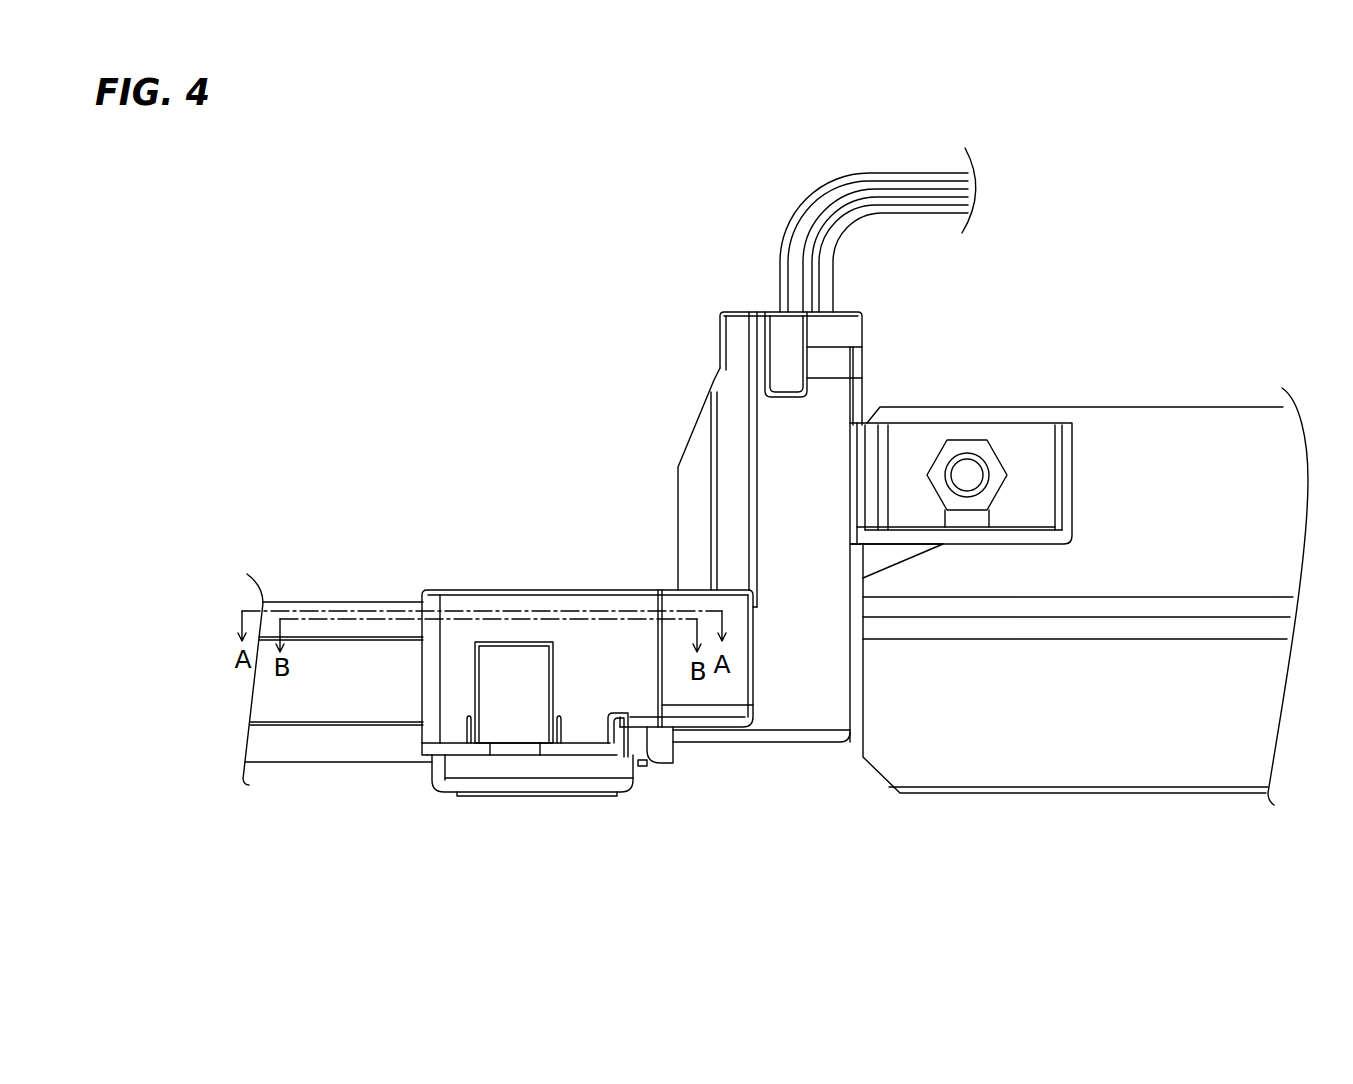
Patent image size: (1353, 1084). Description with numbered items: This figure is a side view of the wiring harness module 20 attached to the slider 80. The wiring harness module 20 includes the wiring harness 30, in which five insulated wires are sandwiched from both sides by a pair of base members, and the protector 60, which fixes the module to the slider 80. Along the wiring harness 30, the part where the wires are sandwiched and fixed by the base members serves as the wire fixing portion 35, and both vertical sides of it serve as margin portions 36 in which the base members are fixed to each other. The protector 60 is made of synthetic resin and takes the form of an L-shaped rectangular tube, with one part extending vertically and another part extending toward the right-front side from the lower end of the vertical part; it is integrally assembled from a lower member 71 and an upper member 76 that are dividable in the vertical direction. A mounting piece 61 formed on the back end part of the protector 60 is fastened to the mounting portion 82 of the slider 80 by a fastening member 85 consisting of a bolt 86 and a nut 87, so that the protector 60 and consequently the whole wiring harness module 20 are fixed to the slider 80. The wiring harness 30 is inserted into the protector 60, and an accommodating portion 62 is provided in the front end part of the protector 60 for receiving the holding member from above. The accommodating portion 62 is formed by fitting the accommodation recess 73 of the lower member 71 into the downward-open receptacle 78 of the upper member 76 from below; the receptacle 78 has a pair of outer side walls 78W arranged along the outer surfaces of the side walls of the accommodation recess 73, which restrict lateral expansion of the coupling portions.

The wiring harness module 20 is at (734, 240).
The wiring harness 30 is at (337, 753).
The wire fixing portion 35 is at (284, 710).
The margin portions 36 is at (362, 738).
The protector 60 is at (591, 732).
The mounting piece 61 is at (1033, 445).
The accommodating portion 62 is at (549, 782).
The lower member 71 is at (707, 720).
The accommodation recess 73 is at (498, 761).
The upper member 76 is at (717, 680).
The receptacle 78 is at (577, 717).
The outer side walls 78W is at (582, 657).
The slider 80 is at (1125, 755).
The mounting portion 82 is at (1168, 455).
The fastening member 85 is at (951, 412).
The bolt 86 is at (968, 470).
The nut 87 is at (938, 477).